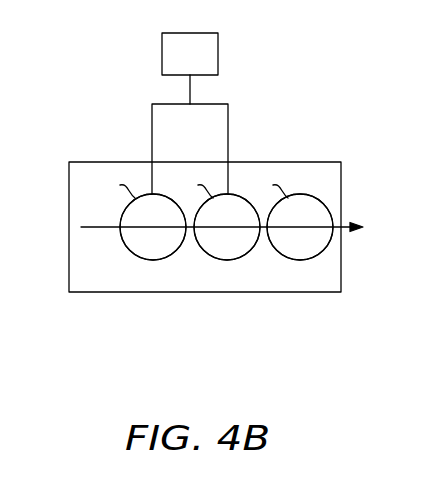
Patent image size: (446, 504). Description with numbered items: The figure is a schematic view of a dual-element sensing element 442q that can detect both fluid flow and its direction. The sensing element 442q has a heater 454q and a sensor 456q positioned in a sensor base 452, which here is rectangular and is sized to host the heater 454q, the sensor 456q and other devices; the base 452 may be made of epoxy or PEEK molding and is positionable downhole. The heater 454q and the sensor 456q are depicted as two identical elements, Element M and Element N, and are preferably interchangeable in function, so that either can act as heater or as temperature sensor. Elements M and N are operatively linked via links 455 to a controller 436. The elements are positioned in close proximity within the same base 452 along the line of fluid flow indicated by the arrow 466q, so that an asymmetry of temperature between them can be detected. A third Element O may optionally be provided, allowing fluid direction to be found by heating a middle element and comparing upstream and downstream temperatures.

The dual-element sensing element 442q is at (88, 75).
The controller 436 is at (207, 65).
The sensor base 452 is at (167, 175).
The links 455 is at (152, 147).
The output flow path 466q is at (348, 221).
The heater 454q is at (300, 260).
The sensor 456q is at (226, 275).